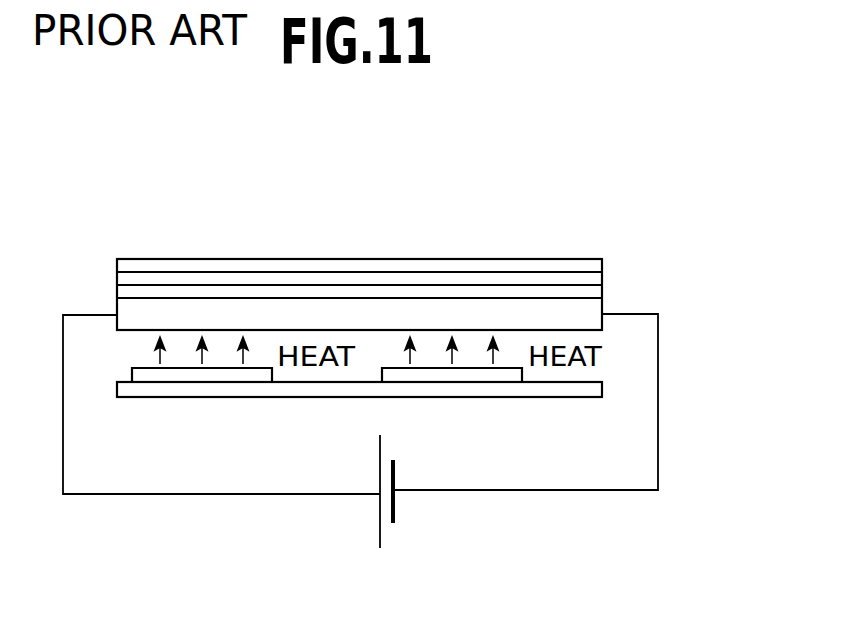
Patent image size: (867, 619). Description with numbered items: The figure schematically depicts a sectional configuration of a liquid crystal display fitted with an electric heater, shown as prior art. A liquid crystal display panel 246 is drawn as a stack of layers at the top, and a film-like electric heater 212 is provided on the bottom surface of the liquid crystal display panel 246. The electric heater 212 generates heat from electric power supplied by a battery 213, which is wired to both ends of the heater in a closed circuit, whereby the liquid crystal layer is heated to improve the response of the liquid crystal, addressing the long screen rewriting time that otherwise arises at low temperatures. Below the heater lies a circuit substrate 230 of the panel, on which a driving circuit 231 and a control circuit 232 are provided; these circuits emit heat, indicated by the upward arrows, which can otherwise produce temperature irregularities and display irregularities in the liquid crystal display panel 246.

The film-like electric heater 212 is at (307, 306).
The liquid crystal display panel 246 is at (614, 268).
The circuit substrate 230 is at (326, 394).
The driving circuit 231 is at (201, 378).
The control circuit 232 is at (476, 384).
The battery 213 is at (380, 527).